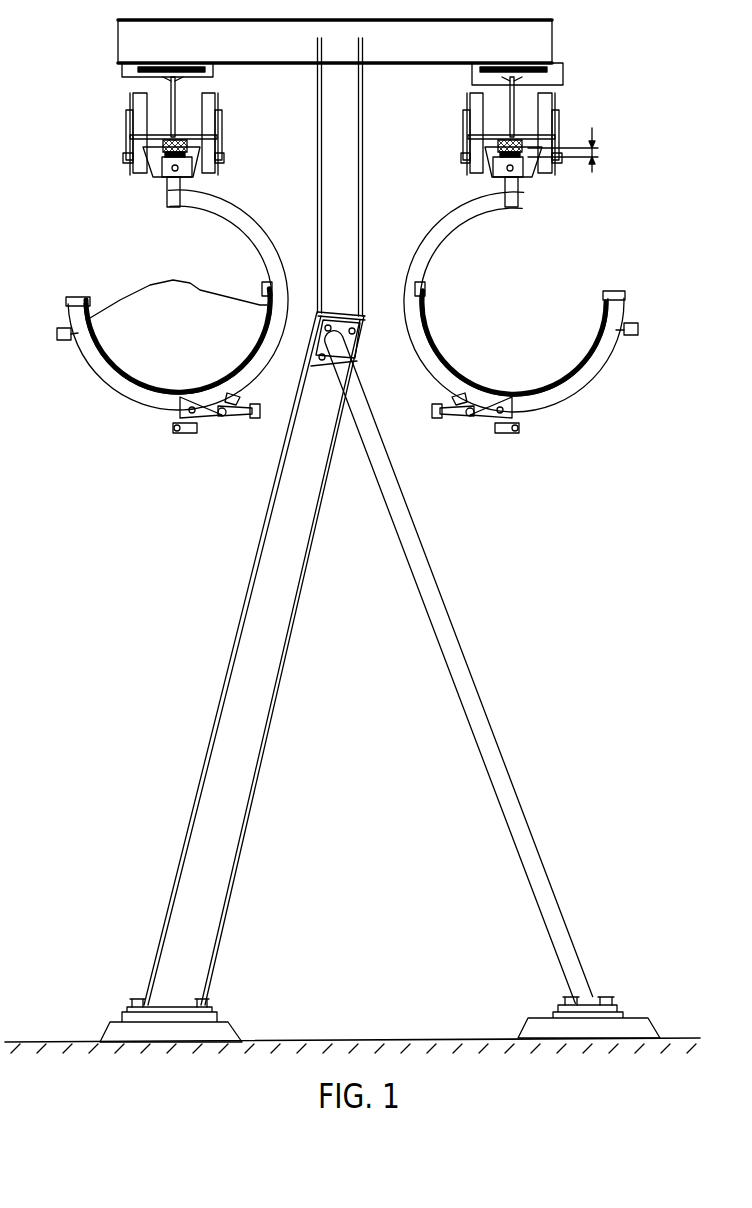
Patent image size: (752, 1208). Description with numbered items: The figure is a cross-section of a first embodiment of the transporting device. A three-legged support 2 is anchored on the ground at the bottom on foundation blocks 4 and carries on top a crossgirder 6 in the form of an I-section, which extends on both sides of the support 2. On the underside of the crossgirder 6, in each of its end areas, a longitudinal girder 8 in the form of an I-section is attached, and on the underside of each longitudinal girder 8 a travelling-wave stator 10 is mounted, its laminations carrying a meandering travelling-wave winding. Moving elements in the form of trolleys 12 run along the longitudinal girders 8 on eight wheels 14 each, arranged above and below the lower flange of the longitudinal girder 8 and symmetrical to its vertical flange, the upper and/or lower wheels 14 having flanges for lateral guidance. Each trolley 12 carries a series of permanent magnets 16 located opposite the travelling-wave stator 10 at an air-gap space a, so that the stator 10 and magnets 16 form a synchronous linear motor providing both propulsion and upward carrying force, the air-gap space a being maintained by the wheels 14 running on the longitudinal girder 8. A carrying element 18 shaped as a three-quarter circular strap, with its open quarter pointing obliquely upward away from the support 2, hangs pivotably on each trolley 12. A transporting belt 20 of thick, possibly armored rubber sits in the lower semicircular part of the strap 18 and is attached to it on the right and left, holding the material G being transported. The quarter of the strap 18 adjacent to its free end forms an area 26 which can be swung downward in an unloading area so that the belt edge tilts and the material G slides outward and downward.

The three-legged support 2 is at (232, 662).
The foundation blocks 4 is at (227, 1033).
The crossgirder 6 is at (414, 50).
The longitudinal girder 8 is at (177, 87).
The travelling-wave stator 10 is at (165, 157).
The trolley 12 is at (344, 136).
The wheels 14 is at (123, 135).
The permanent magnets 16 is at (198, 170).
The carrying element 18 is at (268, 248).
The transporting belt 20 is at (463, 375).
The area of strap 26 is at (111, 390).
The material being transported G is at (147, 290).
The air-gap space a is at (573, 150).